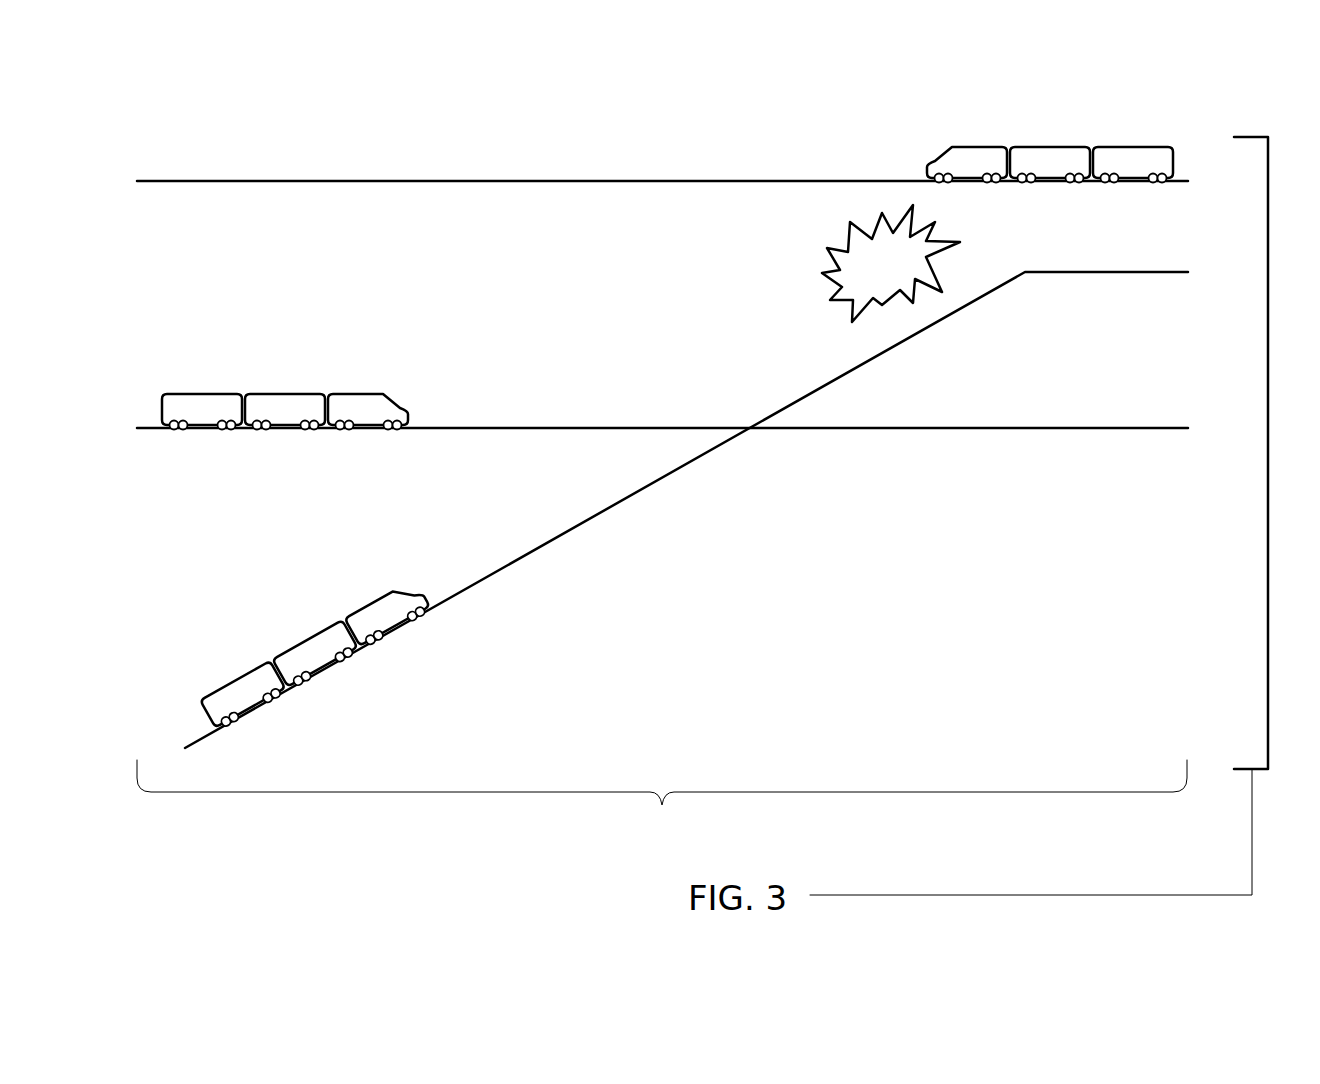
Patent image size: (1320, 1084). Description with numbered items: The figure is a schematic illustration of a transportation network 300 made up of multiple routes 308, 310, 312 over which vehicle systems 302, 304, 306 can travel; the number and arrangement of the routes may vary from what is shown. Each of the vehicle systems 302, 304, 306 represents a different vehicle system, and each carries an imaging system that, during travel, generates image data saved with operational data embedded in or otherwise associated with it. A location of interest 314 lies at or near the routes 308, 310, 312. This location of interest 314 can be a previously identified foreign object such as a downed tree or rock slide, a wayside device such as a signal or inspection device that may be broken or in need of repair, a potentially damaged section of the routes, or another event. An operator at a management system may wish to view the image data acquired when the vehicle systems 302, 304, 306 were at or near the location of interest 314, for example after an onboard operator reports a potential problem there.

The transportation network 300 is at (662, 799).
The vehicle system 302 is at (1022, 127).
The vehicle system 304 is at (388, 383).
The vehicle system 306 is at (381, 569).
The route 308 is at (632, 182).
The route 310 is at (527, 430).
The route 312 is at (872, 362).
The location of interest 314 is at (947, 240).